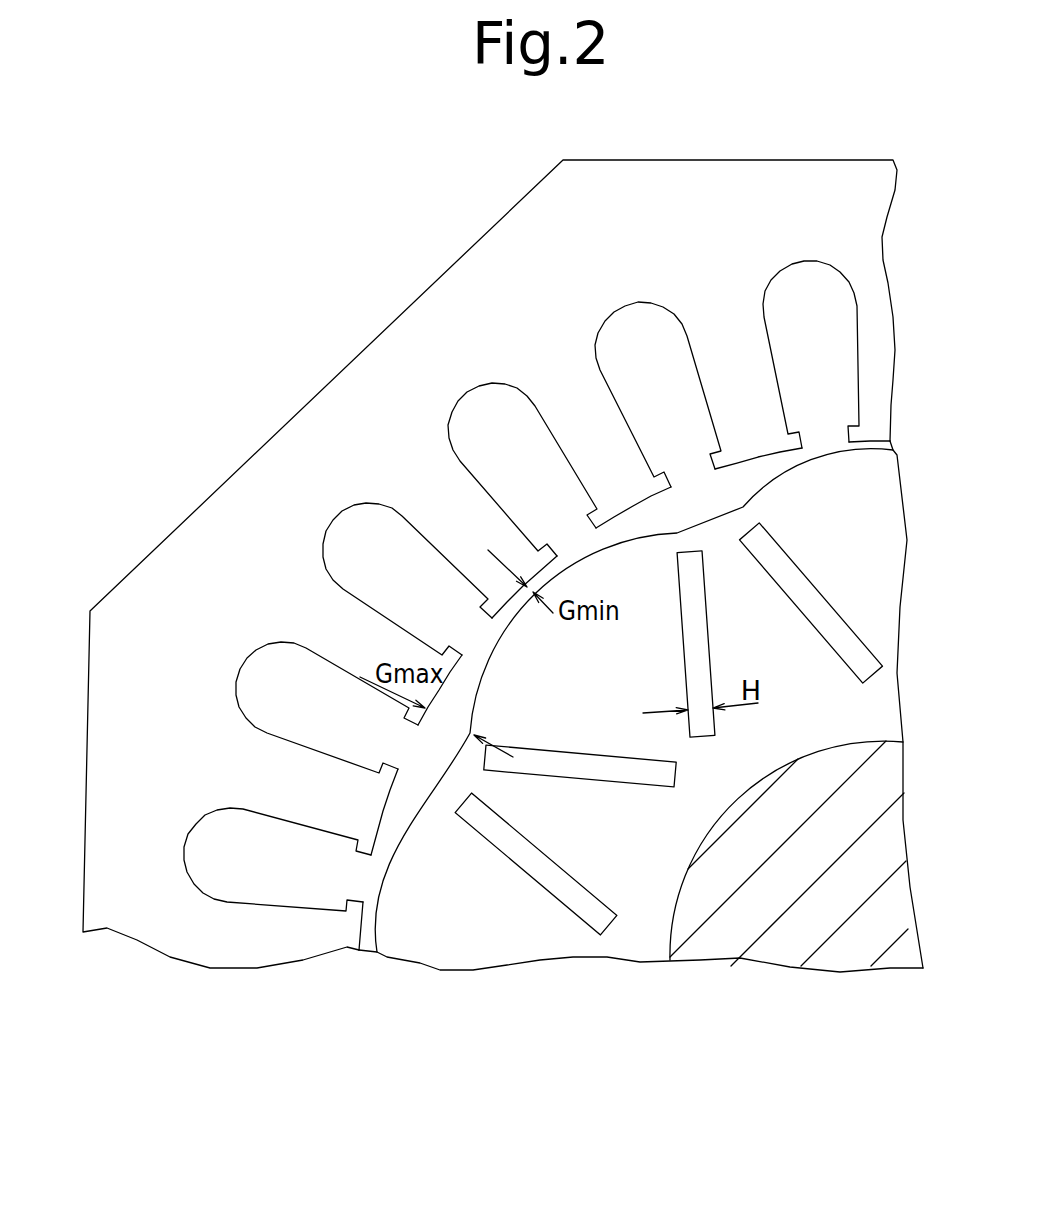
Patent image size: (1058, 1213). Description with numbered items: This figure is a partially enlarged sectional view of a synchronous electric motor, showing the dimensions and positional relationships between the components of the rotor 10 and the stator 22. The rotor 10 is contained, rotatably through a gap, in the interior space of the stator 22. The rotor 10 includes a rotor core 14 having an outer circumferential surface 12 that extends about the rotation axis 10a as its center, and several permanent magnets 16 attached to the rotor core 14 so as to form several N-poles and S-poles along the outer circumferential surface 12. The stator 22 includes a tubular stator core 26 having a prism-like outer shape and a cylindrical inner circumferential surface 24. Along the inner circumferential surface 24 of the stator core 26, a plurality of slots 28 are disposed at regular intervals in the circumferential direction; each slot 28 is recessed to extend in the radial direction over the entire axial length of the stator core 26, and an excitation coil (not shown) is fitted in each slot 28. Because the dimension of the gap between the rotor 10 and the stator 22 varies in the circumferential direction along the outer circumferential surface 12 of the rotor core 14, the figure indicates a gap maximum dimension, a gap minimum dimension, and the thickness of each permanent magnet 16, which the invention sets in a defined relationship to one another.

The rotor 10 is at (660, 715).
The rotation axis 10a is at (887, 945).
The outer circumferential surface 12 is at (817, 457).
The rotor core 14 is at (862, 527).
The permanent magnet 16 is at (578, 900).
The stator 22 is at (490, 535).
The inner circumferential surface 24 is at (419, 361).
The stator core 26 is at (739, 461).
The slot 28 is at (604, 382).